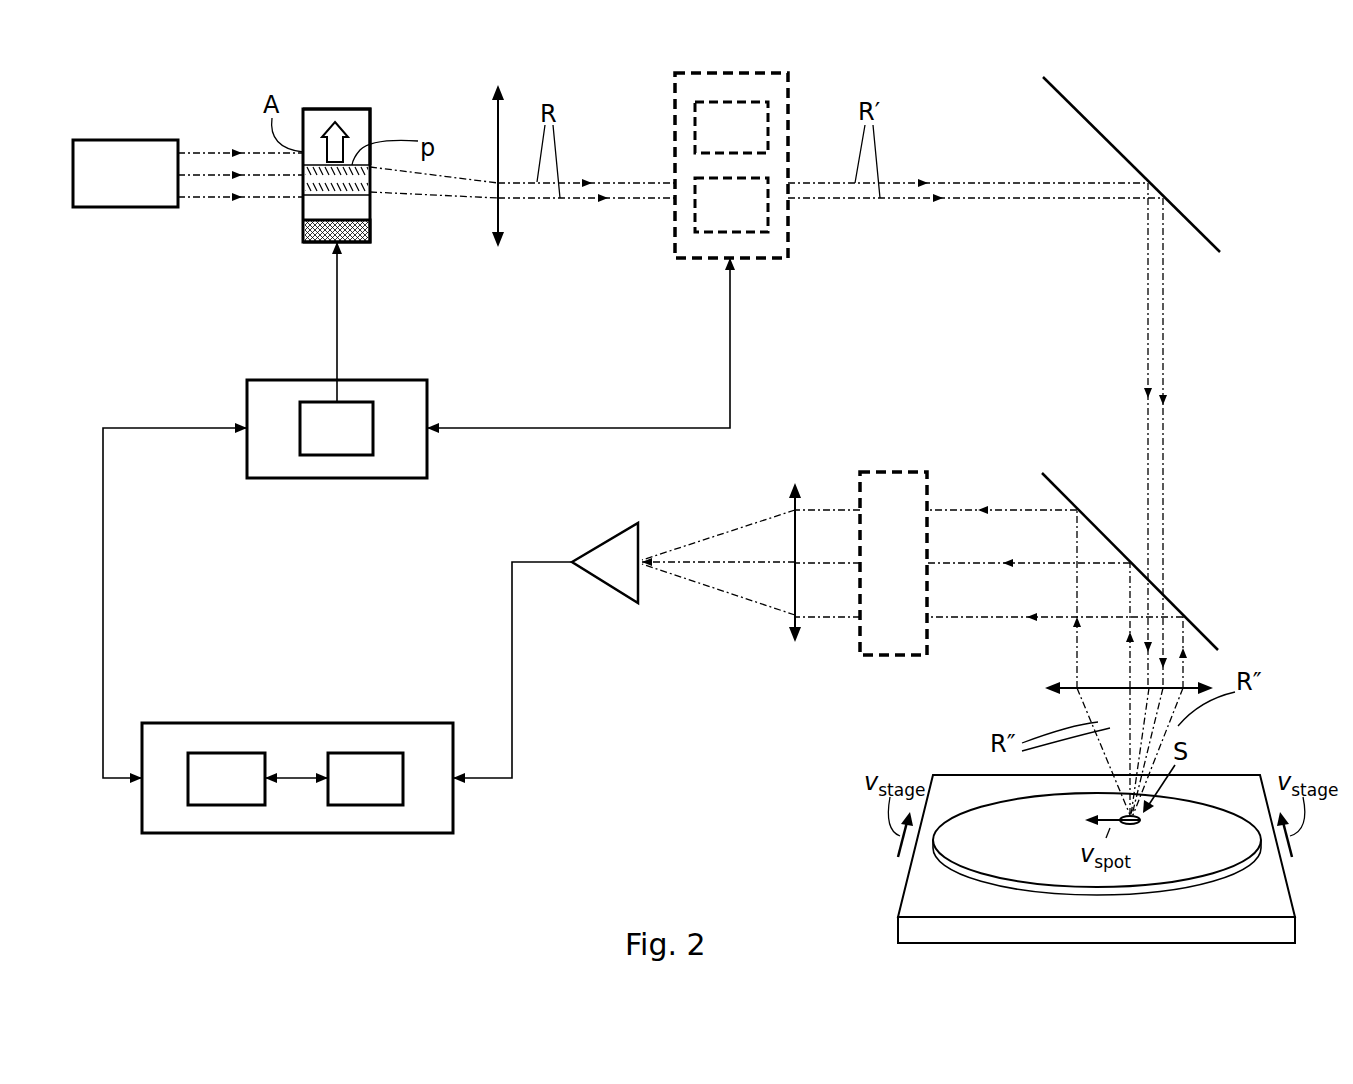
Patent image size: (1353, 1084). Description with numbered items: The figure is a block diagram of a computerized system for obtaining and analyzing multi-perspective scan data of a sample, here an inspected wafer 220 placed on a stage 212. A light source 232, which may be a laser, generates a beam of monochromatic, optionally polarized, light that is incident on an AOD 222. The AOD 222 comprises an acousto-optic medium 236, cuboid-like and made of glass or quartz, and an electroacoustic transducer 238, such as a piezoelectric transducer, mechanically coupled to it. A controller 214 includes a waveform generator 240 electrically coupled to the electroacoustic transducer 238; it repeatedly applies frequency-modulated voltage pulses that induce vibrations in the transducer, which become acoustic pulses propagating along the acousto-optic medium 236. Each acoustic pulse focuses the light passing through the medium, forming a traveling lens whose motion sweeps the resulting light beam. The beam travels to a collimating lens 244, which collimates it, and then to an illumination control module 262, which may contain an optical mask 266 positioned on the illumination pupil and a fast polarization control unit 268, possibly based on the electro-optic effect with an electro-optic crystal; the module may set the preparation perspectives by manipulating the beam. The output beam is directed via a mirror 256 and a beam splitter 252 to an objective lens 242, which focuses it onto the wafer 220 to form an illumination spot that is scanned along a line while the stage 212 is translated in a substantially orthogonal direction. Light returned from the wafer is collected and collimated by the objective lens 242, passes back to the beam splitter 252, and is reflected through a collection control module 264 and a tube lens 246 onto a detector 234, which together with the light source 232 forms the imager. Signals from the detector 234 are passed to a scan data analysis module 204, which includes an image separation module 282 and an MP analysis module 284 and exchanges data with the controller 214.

The light source 232 is at (146, 190).
The AOD 222 is at (290, 214).
The acousto-optic medium 236 is at (372, 125).
The electroacoustic transducer 238 is at (372, 232).
The collimating lens 244 is at (500, 127).
The illumination control module 262 is at (680, 258).
The optical mask 266 is at (752, 141).
The fast polarization control unit 268 is at (752, 218).
The mirror 256 is at (1140, 176).
The waveform generator 240 is at (358, 441).
The controller 214 is at (335, 478).
The beam splitter 252 is at (1094, 526).
The collection control module 264 is at (914, 577).
The detector 234 is at (592, 575).
The tube lens 246 is at (793, 618).
The objective lens 242 is at (1050, 690).
The MP analysis module 284 is at (247, 791).
The image separation module 282 is at (386, 791).
The scan data analysis module 204 is at (200, 835).
The stage 212 is at (902, 895).
The wafer 220 is at (1215, 788).